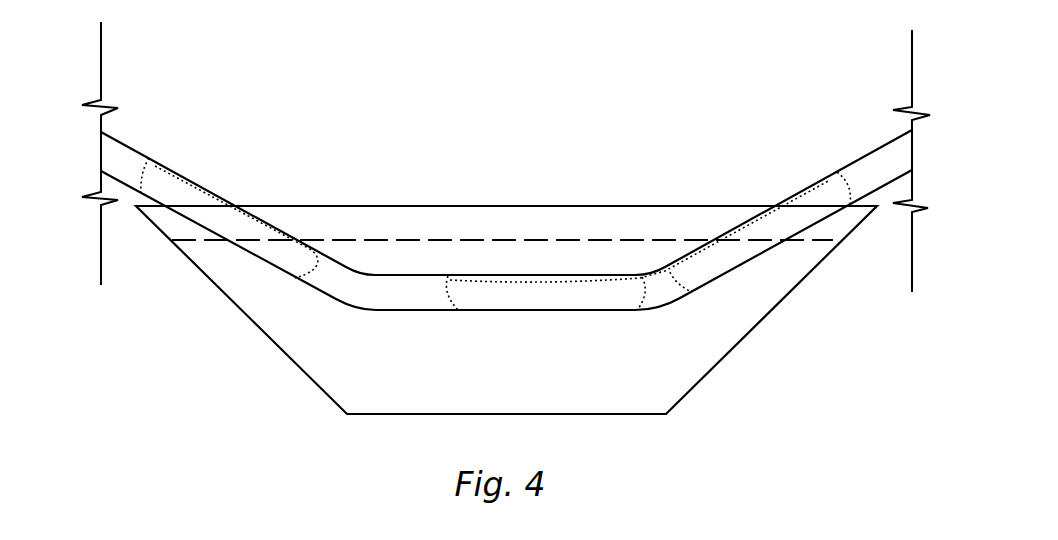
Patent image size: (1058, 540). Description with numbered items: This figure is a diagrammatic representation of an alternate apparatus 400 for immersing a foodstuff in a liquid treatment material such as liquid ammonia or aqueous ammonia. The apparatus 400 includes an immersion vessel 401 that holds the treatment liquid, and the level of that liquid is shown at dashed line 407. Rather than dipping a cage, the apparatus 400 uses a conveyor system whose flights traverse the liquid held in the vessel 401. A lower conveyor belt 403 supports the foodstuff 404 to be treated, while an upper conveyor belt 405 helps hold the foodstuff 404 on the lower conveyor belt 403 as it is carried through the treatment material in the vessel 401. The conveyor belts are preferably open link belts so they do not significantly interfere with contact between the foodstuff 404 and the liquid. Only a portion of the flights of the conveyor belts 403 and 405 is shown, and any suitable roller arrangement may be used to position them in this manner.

The apparatus 400 is at (760, 389).
The immersion vessel 401 is at (790, 292).
The lower conveyor belt 403 is at (385, 310).
The foodstuff 404 is at (214, 195).
The upper conveyor belt 405 is at (423, 275).
The dashed line 407 is at (628, 240).